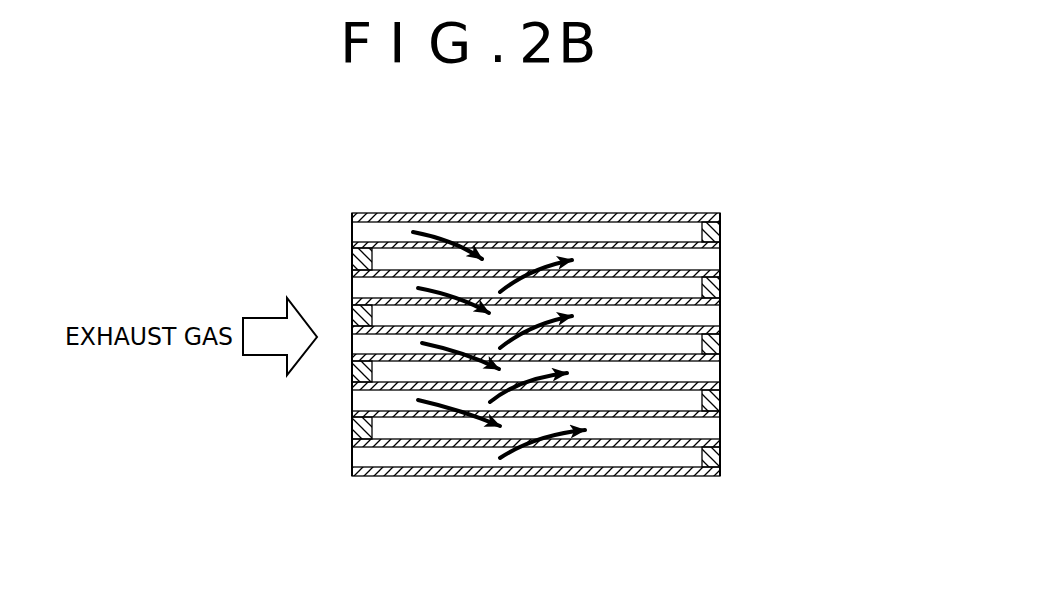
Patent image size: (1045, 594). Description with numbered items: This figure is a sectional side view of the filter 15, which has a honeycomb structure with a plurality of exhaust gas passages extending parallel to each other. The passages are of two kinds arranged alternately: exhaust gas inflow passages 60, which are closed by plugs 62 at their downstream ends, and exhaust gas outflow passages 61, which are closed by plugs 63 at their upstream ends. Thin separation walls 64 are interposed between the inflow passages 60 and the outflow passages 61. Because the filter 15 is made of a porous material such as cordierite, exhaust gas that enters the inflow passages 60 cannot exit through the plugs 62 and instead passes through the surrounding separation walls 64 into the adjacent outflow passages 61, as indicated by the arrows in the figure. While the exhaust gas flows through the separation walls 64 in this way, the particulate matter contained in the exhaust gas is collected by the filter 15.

The filter 15 is at (656, 211).
The exhaust gas inflow passage 60 is at (678, 230).
The exhaust gas outflow passage 61 is at (372, 242).
The plug 62 is at (720, 232).
The plug 63 is at (353, 258).
The separation wall 64 is at (513, 272).